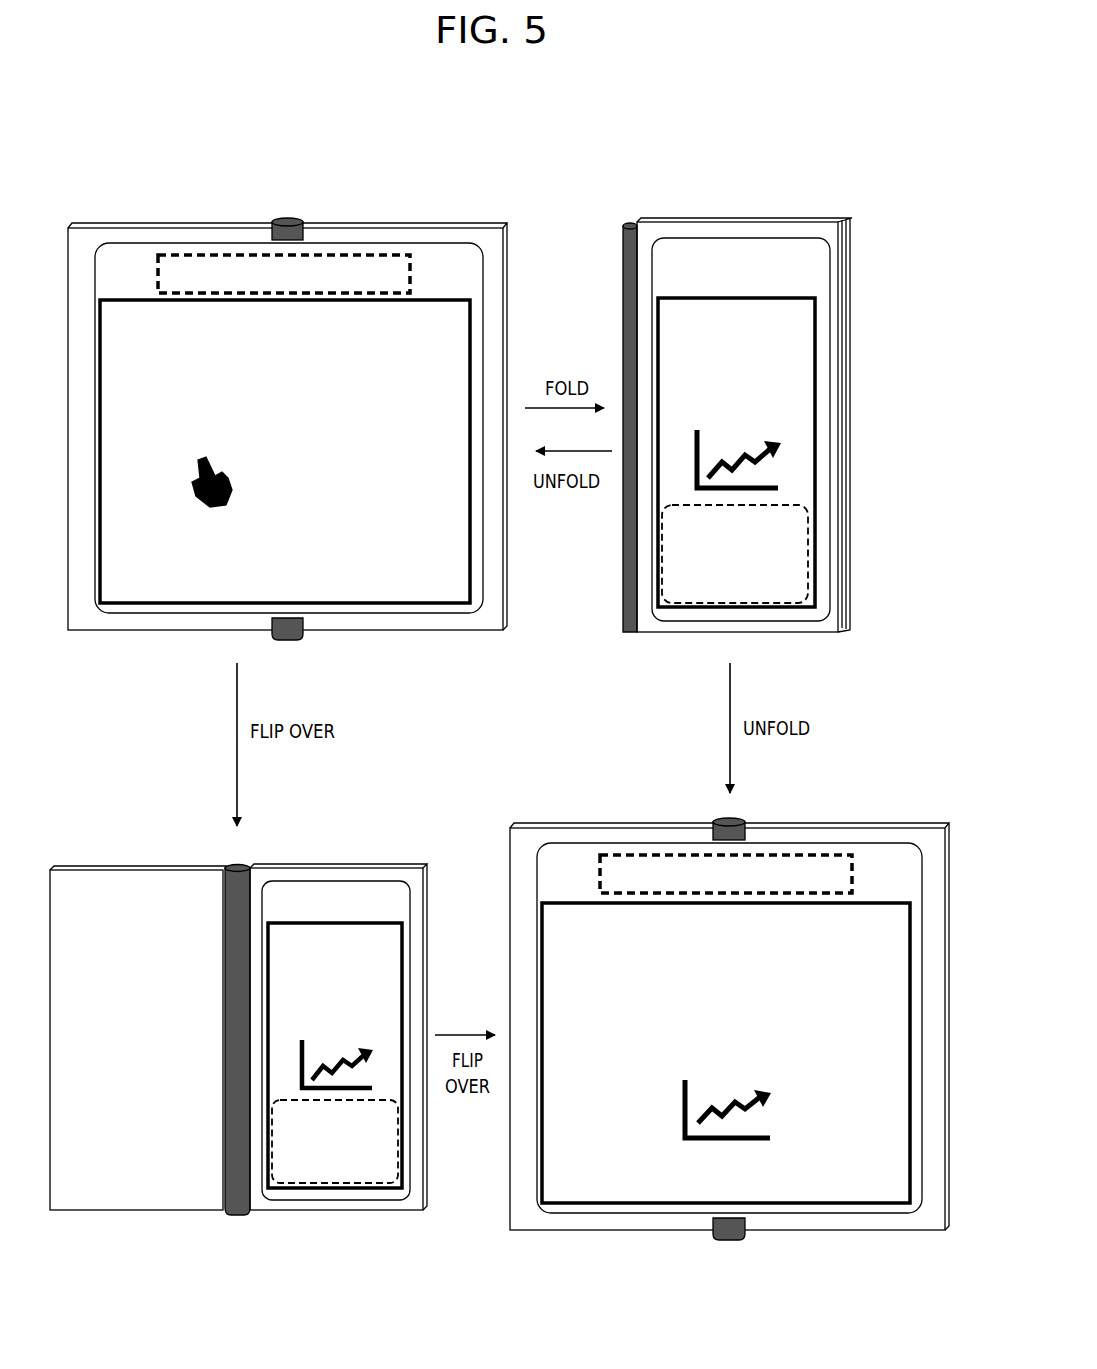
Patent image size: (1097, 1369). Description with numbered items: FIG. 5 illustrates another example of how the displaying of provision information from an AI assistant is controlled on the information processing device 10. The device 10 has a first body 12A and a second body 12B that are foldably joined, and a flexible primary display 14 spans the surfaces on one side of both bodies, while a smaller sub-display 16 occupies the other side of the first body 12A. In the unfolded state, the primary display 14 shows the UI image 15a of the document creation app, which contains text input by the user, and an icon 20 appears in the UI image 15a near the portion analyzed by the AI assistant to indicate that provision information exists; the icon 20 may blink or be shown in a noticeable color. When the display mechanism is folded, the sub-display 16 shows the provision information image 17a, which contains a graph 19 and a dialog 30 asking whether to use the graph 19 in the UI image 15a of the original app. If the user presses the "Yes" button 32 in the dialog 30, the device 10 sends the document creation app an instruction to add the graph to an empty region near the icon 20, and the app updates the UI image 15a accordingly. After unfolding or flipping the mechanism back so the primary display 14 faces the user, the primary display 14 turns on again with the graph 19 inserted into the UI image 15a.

The information processing device 10 is at (291, 209).
The first body 12A is at (118, 223).
The second body 12B is at (416, 222).
The primary display 14 is at (222, 254).
The UI image 15a is at (158, 583).
The sub-display 16 is at (718, 253).
The provision information image 17a is at (814, 340).
The graph 19 is at (778, 465).
The icon 20 is at (232, 487).
The dialog 30 is at (787, 505).
The "Yes" button 32 is at (688, 587).